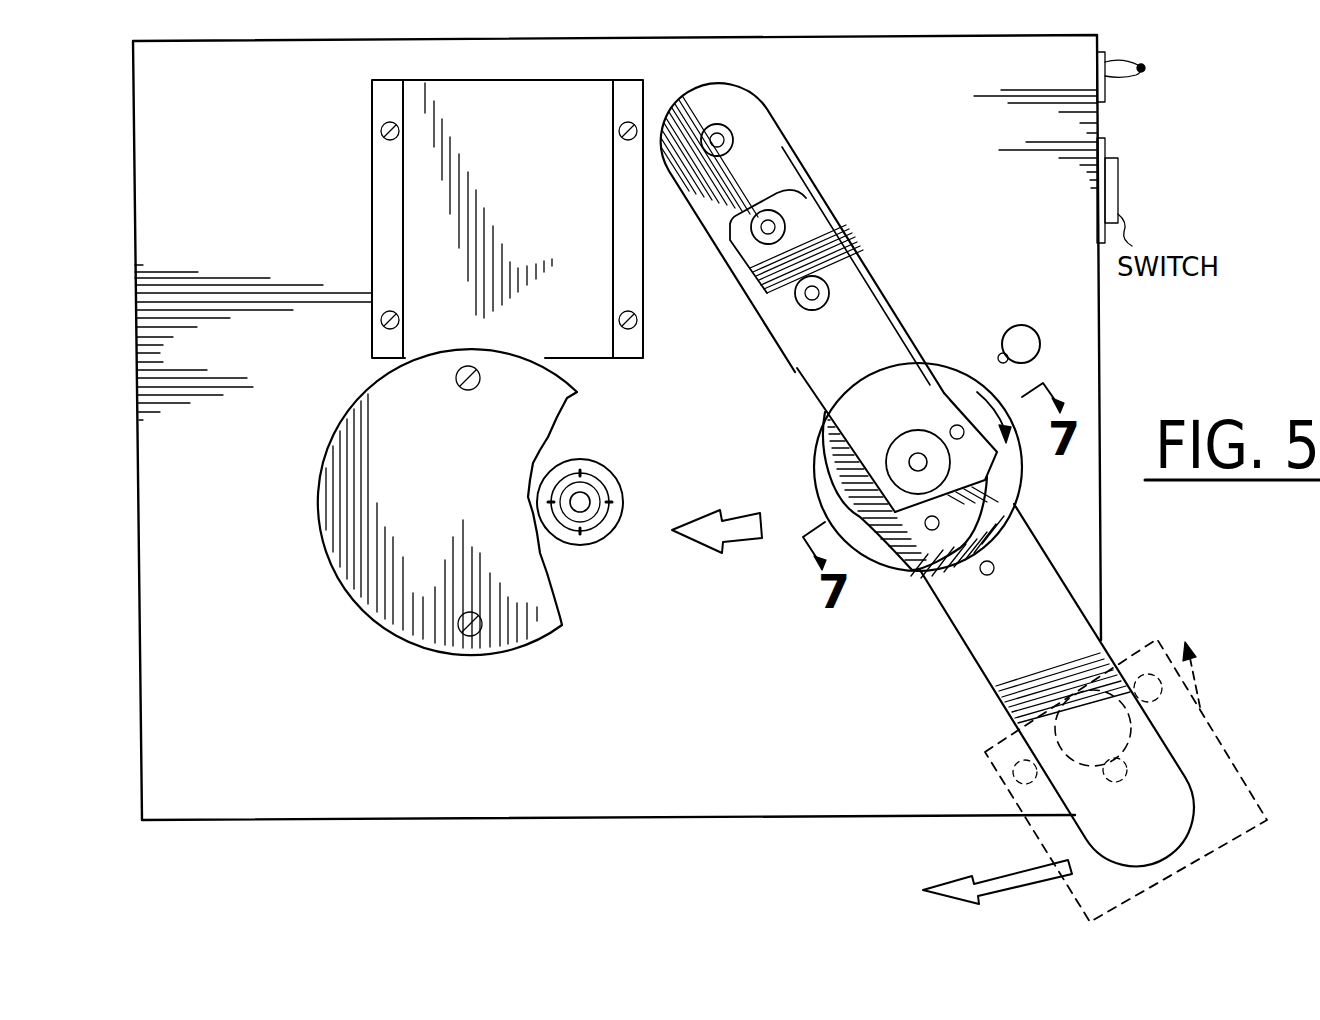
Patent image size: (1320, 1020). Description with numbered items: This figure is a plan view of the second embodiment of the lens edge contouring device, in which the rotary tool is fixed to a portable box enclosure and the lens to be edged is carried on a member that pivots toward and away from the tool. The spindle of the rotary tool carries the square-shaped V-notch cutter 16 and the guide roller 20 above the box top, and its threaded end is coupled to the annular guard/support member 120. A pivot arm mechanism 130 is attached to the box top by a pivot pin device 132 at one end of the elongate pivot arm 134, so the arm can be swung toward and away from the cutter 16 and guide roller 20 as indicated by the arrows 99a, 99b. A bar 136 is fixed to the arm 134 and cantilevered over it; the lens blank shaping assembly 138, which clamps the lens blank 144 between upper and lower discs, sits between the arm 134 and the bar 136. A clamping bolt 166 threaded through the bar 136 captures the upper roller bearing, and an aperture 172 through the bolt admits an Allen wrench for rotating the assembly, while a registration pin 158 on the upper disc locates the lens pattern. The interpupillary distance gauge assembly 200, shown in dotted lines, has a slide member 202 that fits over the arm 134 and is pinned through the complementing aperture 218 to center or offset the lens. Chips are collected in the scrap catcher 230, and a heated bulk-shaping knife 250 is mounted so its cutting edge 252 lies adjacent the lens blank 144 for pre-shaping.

The scrap catcher 230 is at (541, 223).
The annular guard/support member 120 is at (470, 517).
The guide roller 20 is at (608, 463).
The square-shaped V-notch cutter 16 is at (582, 545).
The direction of movement arrow 99a is at (712, 554).
The pivot arm mechanism 130 is at (773, 167).
The pivot pin device 132 is at (735, 133).
The lens blank shaping assembly 138 is at (887, 248).
The lens blank 144 is at (832, 462).
The bar 136 is at (890, 536).
The clamping bolt 166 is at (912, 438).
The aperture 172 is at (911, 456).
The registration pin 158 is at (953, 425).
The complementing aperture 218 is at (988, 577).
The elongate pivot arm 134 is at (1012, 664).
The heated bulk-shaping knife 250 is at (1040, 343).
The cutting edge 252 is at (1002, 354).
The interpupillary distance gauge assembly 200 is at (972, 795).
The slide member 202 is at (1172, 668).
The direction of movement arrow 99b is at (930, 888).